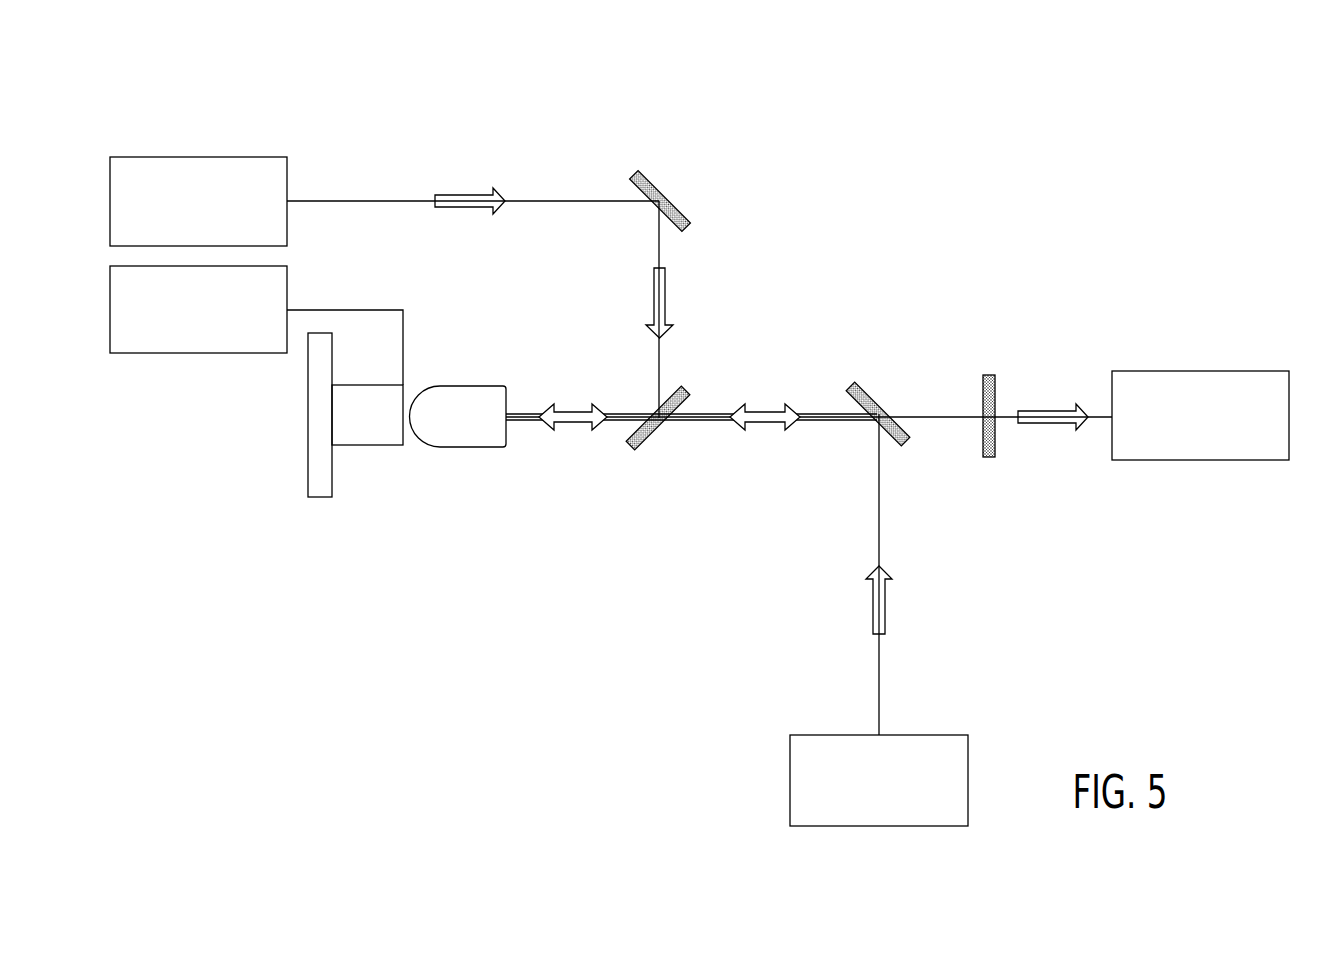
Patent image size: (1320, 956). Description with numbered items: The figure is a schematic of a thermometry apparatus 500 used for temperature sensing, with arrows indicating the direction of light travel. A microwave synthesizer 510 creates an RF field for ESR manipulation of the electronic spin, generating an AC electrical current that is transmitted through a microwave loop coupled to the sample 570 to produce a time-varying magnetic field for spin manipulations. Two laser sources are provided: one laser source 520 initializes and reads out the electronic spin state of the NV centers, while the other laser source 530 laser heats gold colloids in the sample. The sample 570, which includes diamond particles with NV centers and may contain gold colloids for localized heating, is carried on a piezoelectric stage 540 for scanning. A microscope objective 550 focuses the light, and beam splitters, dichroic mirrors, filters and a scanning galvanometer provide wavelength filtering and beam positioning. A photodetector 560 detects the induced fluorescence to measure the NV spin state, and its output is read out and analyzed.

The thermometry apparatus 500 is at (225, 93).
The microwave synthesizer 510 is at (289, 283).
The laser source 520 is at (790, 780).
The laser source 530 is at (289, 178).
The piezoelectric stage 540 is at (308, 420).
The optical lens (microscope objective) 550 is at (463, 385).
The photodetector 560 is at (1198, 371).
The sample 570 is at (368, 446).